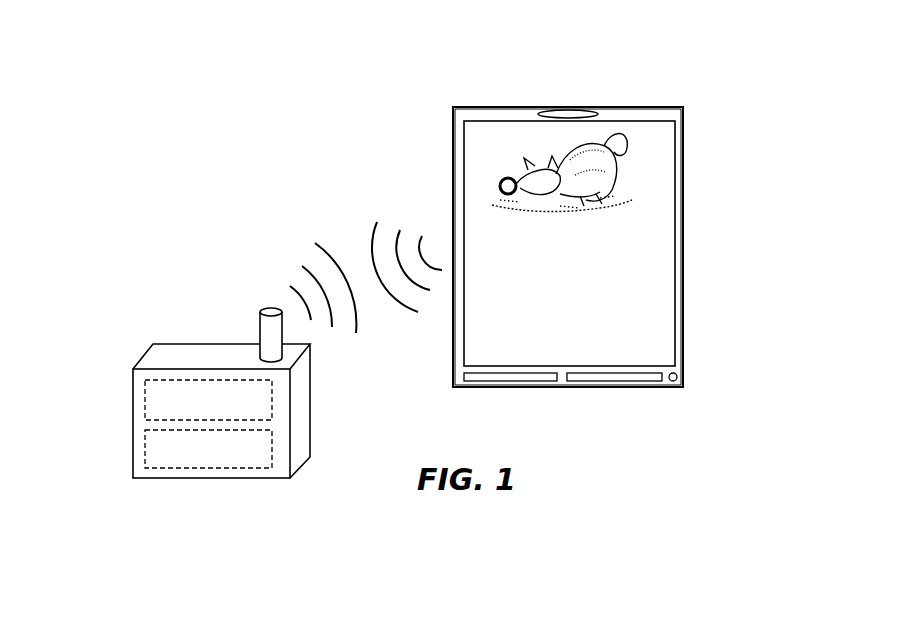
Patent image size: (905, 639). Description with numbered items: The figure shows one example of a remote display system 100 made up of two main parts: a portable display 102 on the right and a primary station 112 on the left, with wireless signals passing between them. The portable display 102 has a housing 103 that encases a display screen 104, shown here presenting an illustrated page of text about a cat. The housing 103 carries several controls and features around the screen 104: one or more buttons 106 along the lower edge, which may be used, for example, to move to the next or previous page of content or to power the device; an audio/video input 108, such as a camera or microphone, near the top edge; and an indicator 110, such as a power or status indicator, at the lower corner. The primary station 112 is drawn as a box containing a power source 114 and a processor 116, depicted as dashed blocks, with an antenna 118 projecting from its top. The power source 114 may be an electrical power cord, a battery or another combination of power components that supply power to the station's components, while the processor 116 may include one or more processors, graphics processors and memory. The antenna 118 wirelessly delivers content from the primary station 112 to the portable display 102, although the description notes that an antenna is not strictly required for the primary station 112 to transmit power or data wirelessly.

The remote display system 100 is at (776, 86).
The portable display 102 is at (684, 275).
The housing 103 is at (656, 115).
The display screen 104 is at (665, 203).
The buttons 106 is at (542, 376).
The audio/video input 108 is at (560, 108).
The indicator 110 is at (680, 378).
The primary station 112 is at (205, 344).
The power source 114 is at (145, 453).
The processor 116 is at (145, 398).
The antenna 118 is at (262, 306).